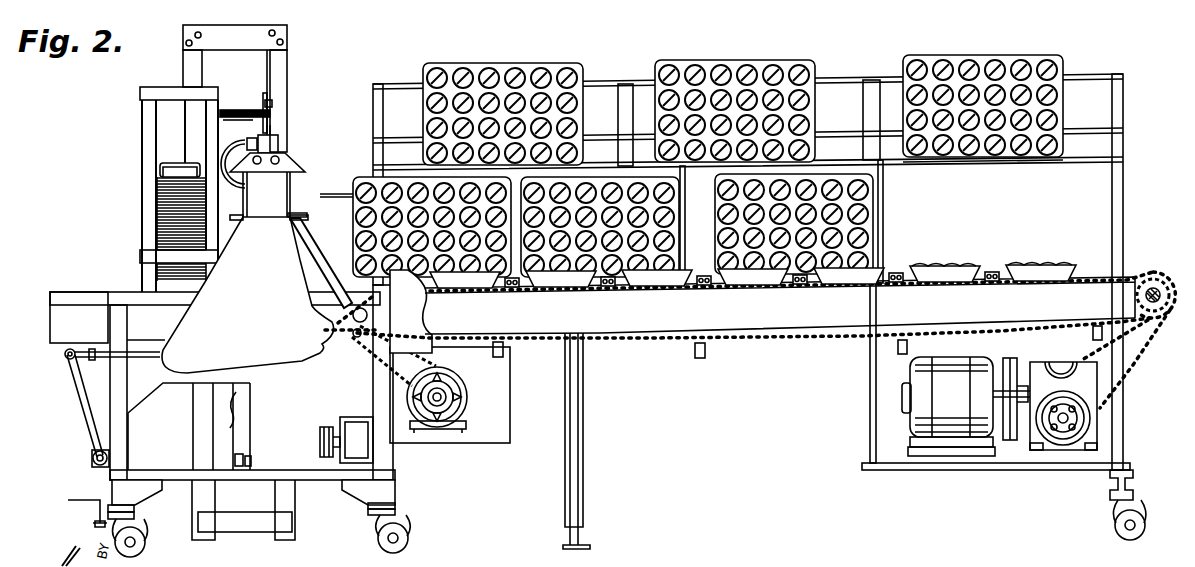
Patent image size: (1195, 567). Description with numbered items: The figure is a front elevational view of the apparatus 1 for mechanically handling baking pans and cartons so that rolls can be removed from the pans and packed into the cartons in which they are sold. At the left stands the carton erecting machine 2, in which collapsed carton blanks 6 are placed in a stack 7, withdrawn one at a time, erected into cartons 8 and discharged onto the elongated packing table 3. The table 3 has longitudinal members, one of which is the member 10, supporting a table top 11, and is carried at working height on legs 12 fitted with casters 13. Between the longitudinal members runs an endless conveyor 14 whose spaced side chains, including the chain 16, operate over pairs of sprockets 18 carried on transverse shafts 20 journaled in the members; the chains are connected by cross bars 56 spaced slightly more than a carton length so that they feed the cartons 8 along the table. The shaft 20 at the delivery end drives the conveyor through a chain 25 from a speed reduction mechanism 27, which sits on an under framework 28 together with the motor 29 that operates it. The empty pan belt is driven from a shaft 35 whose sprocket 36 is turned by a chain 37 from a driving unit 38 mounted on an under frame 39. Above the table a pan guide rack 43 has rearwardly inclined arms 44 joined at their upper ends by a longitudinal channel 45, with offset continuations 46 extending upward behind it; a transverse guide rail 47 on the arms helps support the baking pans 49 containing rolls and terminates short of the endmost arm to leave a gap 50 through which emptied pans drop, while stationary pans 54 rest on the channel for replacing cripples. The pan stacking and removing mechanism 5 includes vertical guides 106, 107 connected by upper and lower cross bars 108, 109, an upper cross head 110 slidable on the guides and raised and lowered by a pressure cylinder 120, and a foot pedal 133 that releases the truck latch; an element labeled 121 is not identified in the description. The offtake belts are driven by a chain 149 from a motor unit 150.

The apparatus 1 is at (838, 56).
The carton erecting machine 2 is at (142, 110).
The packing table 3 is at (1128, 268).
The pan stacking and removing mechanism 5 is at (290, 133).
The collapsed carton blanks 6 is at (157, 204).
The stack 7 is at (157, 229).
The cartons 8 is at (450, 290).
The longitudinal member 10 is at (764, 328).
The table top 11 is at (811, 286).
The legs 12 is at (398, 478).
The casters 13 is at (400, 523).
The endless conveyor 14 is at (698, 350).
The side chain 16 is at (628, 343).
The sprockets 18 is at (1159, 318).
The transverse shafts 20 is at (1154, 278).
The chain 25 is at (1088, 352).
The speed reduction mechanism 27 is at (1040, 364).
The under framework 28 is at (866, 463).
The motor 29 is at (915, 366).
The shaft 35 is at (351, 314).
The sprocket 36 is at (356, 338).
The chain 37 is at (395, 379).
The driving unit 38 is at (455, 379).
The under frame 39 is at (511, 440).
The pan guide rack 43 is at (880, 166).
The arms 44 is at (883, 215).
The longitudinal channel 45 is at (968, 162).
The offset continuations 46 is at (626, 88).
The guide rail 47 is at (705, 192).
The baking pans 49 is at (716, 240).
The opening or gap 50 is at (1096, 214).
The stationary pans 54 is at (509, 64).
The cross bars 56 is at (616, 291).
The vertical guide 106 is at (280, 90).
The vertical guide 107 is at (190, 65).
The cross bar 108 is at (285, 40).
The cross bar 109 is at (265, 532).
The upper cross head 110 is at (270, 112).
The pressure cylinder 120 is at (234, 394).
The switch 121 is at (235, 458).
The foot pedal 133 is at (80, 500).
The chain 149 is at (321, 442).
The motor unit 150 is at (357, 418).